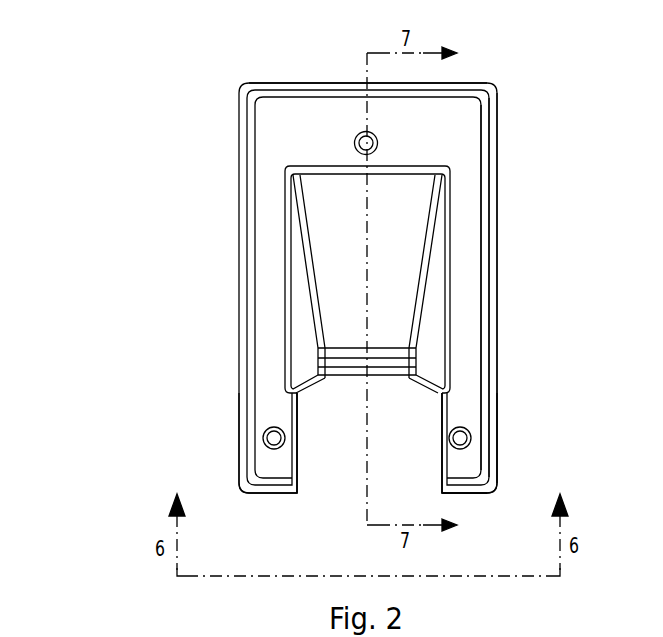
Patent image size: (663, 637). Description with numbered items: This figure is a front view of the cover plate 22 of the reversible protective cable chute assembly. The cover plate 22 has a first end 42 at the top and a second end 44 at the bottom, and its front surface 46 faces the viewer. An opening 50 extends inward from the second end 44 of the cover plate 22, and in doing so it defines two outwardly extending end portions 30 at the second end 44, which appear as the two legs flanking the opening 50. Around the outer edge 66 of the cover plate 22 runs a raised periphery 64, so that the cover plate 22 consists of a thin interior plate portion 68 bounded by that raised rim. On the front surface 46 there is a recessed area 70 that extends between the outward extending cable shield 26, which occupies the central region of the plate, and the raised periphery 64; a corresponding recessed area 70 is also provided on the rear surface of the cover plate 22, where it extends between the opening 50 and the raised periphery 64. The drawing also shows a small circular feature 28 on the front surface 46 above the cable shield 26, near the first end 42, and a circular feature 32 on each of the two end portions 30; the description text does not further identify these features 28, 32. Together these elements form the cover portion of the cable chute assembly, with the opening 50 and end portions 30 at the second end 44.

The cover plate 22 is at (119, 146).
The first end 42 is at (293, 82).
The front surface 46 is at (313, 138).
The aperture 28 is at (379, 145).
The outer edge 66 is at (495, 102).
The raised periphery 64 is at (493, 160).
The thin interior plate portion 68 is at (467, 248).
The recessed area 70 is at (463, 347).
The cable shield 26 is at (402, 276).
The mounting holes 32 is at (270, 440).
The end portions 30 is at (273, 467).
The opening 50 is at (357, 437).
The second end 44 is at (460, 495).